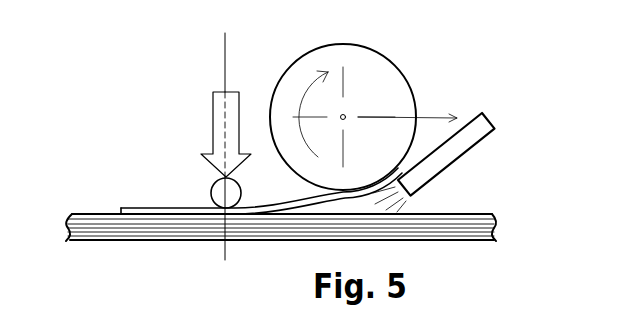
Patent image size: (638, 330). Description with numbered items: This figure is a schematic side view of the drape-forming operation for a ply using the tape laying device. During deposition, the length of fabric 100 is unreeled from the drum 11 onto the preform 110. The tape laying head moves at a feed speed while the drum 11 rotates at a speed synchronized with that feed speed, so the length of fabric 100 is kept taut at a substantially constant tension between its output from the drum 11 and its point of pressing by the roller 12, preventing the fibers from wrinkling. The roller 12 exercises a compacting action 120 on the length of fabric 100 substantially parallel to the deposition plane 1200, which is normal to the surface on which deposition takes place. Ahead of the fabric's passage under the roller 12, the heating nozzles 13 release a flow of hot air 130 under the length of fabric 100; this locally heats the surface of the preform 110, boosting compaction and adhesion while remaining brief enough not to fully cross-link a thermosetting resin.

The drum 11 is at (378, 67).
The roller 12 is at (217, 192).
The heating nozzles 13 is at (457, 149).
The length of fabric 100 is at (132, 208).
The preform 110 is at (458, 236).
The compacting action 120 is at (220, 118).
The flow of hot air 130 is at (409, 208).
The deposition plane 1200 is at (225, 45).